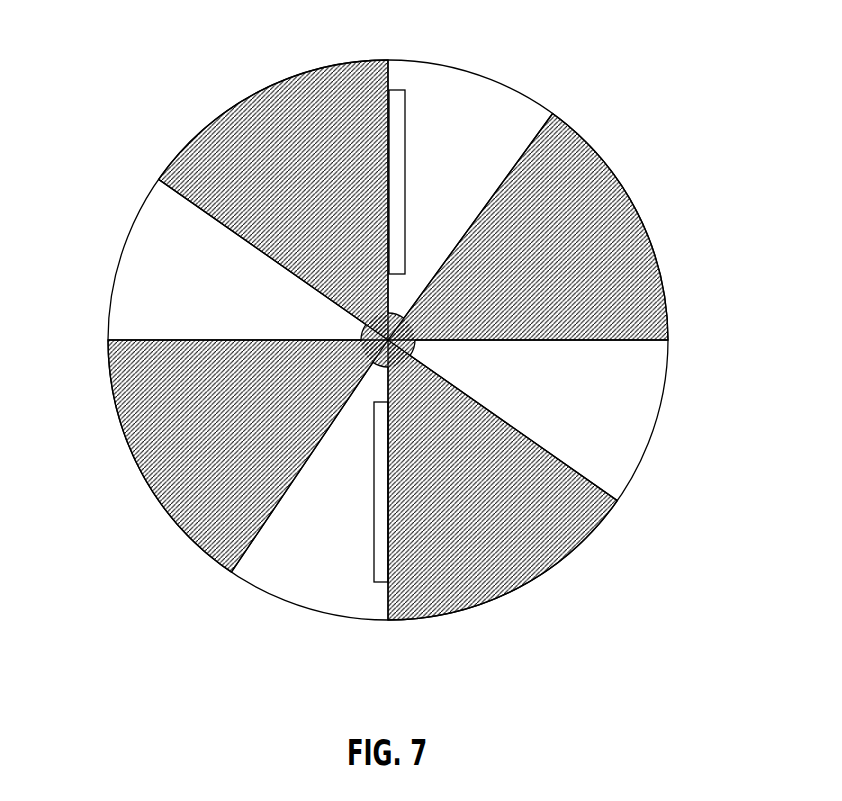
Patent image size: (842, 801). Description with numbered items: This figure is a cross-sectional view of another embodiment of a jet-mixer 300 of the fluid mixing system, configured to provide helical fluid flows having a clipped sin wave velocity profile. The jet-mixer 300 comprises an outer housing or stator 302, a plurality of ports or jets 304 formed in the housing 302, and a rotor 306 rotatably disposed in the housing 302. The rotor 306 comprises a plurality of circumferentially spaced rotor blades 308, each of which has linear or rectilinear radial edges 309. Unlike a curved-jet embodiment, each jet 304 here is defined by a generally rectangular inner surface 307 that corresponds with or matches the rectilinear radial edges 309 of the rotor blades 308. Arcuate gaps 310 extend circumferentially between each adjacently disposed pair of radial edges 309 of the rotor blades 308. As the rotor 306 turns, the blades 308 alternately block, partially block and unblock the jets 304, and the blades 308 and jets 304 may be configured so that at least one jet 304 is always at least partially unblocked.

The jet-mixer 300 is at (133, 44).
The outer housing or stator 302 is at (468, 72).
The ports or jets 304 is at (408, 150).
The rotor 306 is at (268, 97).
The rectangular inner surface 307 is at (395, 336).
The rotor blades 308 is at (592, 158).
The radial edges 309 is at (408, 100).
The arcuate gaps 310 is at (527, 112).